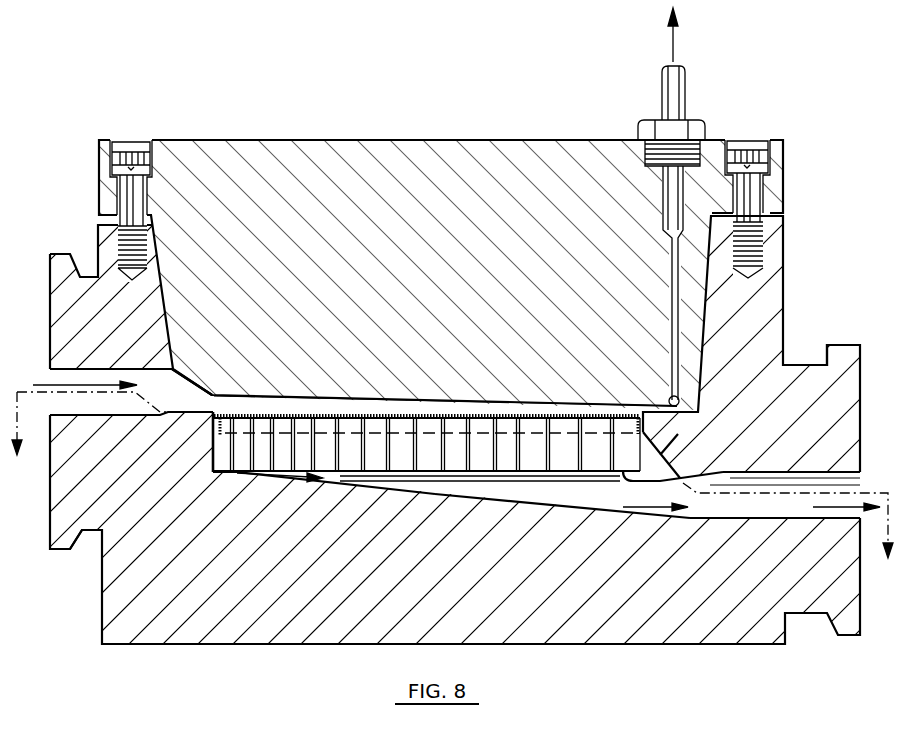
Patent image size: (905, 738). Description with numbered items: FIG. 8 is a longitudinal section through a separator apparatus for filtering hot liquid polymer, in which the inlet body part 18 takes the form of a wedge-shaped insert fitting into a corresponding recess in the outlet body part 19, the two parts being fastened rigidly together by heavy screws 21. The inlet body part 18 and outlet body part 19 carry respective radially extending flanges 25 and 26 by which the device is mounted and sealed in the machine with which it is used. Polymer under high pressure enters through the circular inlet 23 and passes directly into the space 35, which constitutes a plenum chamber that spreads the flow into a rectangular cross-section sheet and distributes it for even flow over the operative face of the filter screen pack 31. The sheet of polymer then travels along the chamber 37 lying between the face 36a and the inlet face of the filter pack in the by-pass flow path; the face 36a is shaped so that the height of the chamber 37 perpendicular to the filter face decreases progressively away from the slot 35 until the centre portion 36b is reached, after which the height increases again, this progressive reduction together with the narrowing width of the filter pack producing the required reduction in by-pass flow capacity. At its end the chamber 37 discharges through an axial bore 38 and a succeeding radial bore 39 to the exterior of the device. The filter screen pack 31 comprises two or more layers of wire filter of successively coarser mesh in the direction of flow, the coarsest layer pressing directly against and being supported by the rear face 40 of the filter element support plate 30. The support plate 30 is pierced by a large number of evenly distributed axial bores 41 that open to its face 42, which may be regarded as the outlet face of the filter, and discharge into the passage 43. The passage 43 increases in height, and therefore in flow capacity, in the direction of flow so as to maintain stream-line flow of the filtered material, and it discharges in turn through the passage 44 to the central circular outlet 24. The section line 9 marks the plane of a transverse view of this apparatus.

The section line 9 is at (454, 490).
The inlet body part 18 is at (387, 238).
The outlet body part 19 is at (637, 571).
The heavy screws 21 is at (127, 210).
The inlet 23 is at (57, 379).
The outlet 24 is at (825, 513).
The flange 25 is at (62, 542).
The flange 26 is at (843, 352).
The filter element support plate 30 is at (222, 465).
The filter screen pack 31 is at (389, 416).
The slot 35 is at (160, 403).
The face 36a is at (272, 412).
The centre portion 36b is at (668, 400).
The chamber 37 is at (334, 400).
The axial bore 38 is at (670, 397).
The radial bore 39 is at (678, 295).
The rear face 40 is at (508, 418).
The axial bores 41 is at (445, 472).
The face 42 is at (380, 474).
The passage 43 is at (560, 500).
The passage 44 is at (725, 508).